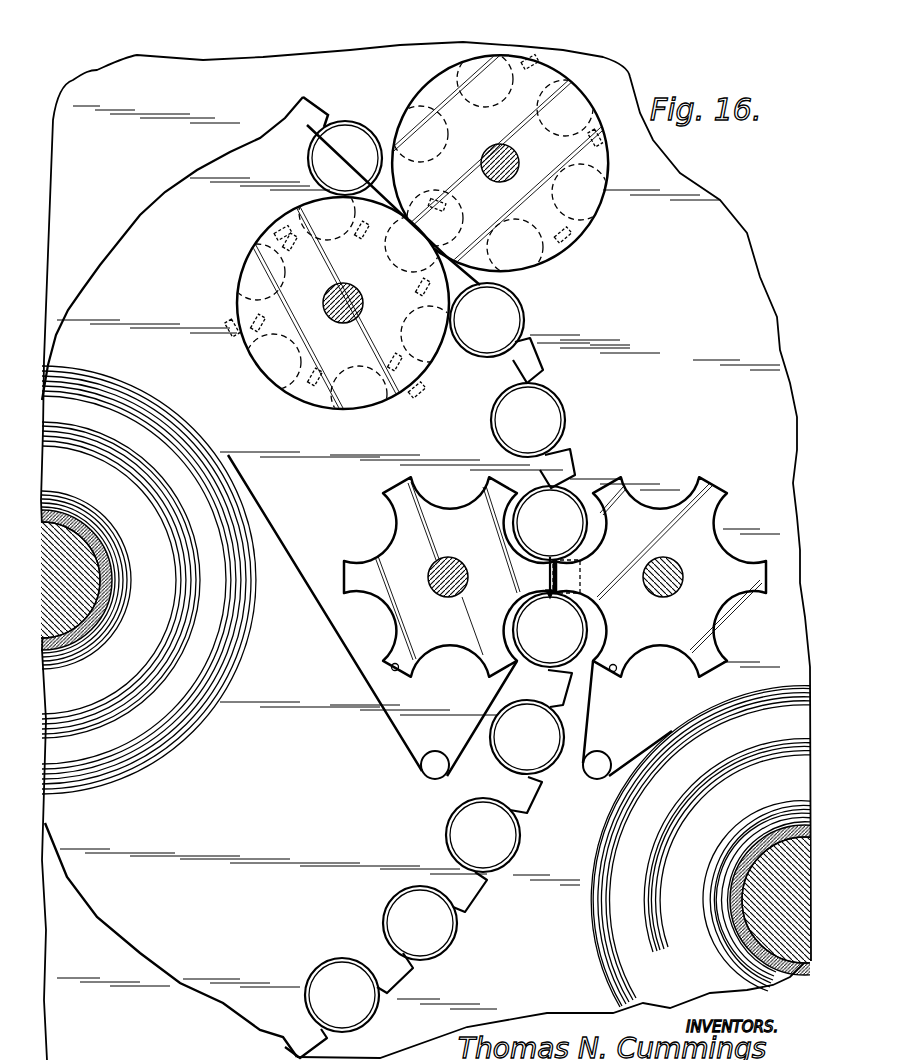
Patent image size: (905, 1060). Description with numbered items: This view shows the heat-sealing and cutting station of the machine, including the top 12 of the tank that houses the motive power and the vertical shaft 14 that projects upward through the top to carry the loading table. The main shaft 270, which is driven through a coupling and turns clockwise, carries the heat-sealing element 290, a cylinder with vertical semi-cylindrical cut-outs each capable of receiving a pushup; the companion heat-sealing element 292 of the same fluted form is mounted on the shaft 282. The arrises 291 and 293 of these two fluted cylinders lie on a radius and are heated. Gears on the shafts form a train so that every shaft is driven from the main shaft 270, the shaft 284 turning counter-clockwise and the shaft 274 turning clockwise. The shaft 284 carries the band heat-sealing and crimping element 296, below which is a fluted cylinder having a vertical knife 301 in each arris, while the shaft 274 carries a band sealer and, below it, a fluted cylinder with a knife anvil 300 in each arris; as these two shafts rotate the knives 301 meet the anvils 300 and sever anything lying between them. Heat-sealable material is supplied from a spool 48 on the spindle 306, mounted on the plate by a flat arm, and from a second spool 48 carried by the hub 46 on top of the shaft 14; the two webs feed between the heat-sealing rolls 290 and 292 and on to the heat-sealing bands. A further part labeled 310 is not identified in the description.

The top 12 is at (690, 366).
The vertical shaft 14 is at (75, 618).
The hub 46 is at (68, 515).
The spool of heat-sealable material 48 is at (620, 967).
The main shaft 270 is at (680, 592).
The shaft 274 is at (497, 143).
The shaft 282 is at (448, 597).
The shaft 284 is at (350, 320).
The heat-sealing element 290 is at (717, 527).
The arris 291 is at (397, 671).
The heat-sealing element 292 is at (403, 523).
The arris 293 is at (613, 672).
The band heat-sealing and crimping element 296 is at (250, 277).
The knife anvil 300 is at (536, 52).
The vertical knife 301 is at (283, 232).
The spindle 306 is at (745, 892).
The drum 310 is at (149, 765).